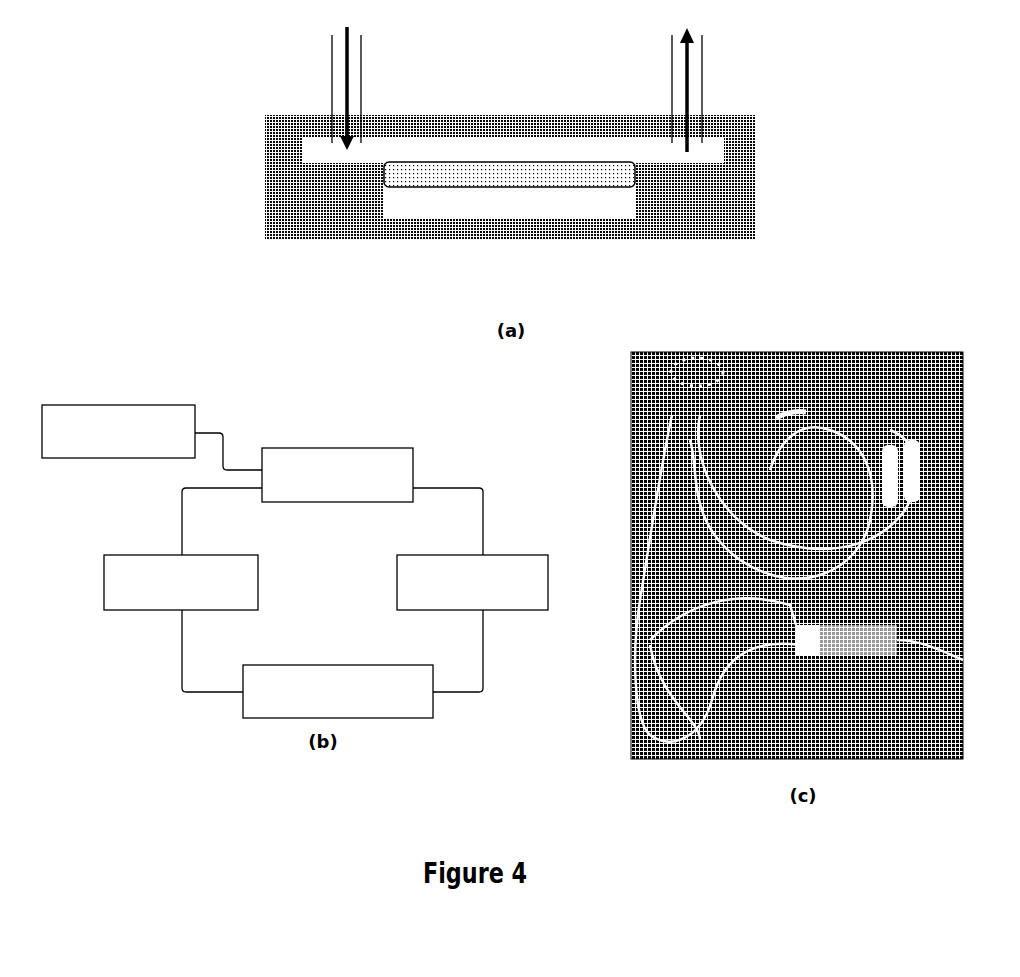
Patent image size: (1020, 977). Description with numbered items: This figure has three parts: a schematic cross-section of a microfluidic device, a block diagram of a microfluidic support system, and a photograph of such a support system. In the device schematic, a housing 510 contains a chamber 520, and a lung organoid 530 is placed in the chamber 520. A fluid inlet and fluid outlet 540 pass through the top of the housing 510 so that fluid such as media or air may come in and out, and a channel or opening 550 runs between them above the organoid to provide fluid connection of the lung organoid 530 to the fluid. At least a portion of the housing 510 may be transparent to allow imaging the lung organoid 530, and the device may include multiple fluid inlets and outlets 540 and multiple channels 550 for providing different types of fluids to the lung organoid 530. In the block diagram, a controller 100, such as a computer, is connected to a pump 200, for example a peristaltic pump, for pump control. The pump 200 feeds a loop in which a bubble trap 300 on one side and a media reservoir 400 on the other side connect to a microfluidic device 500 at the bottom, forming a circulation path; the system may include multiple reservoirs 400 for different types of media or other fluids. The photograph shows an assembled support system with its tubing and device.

The controller 100 is at (118, 431).
The pump 200 is at (337, 475).
The bubble trap 300 is at (181, 582).
The media reservoir 400 is at (472, 582).
The microfluidic device 500 is at (338, 691).
The housing 510 is at (730, 203).
The chamber 520 is at (540, 208).
The lung organoid 530 is at (567, 178).
The fluid inlet and fluid outlet 540 is at (672, 82).
The channel or opening 550 is at (383, 150).